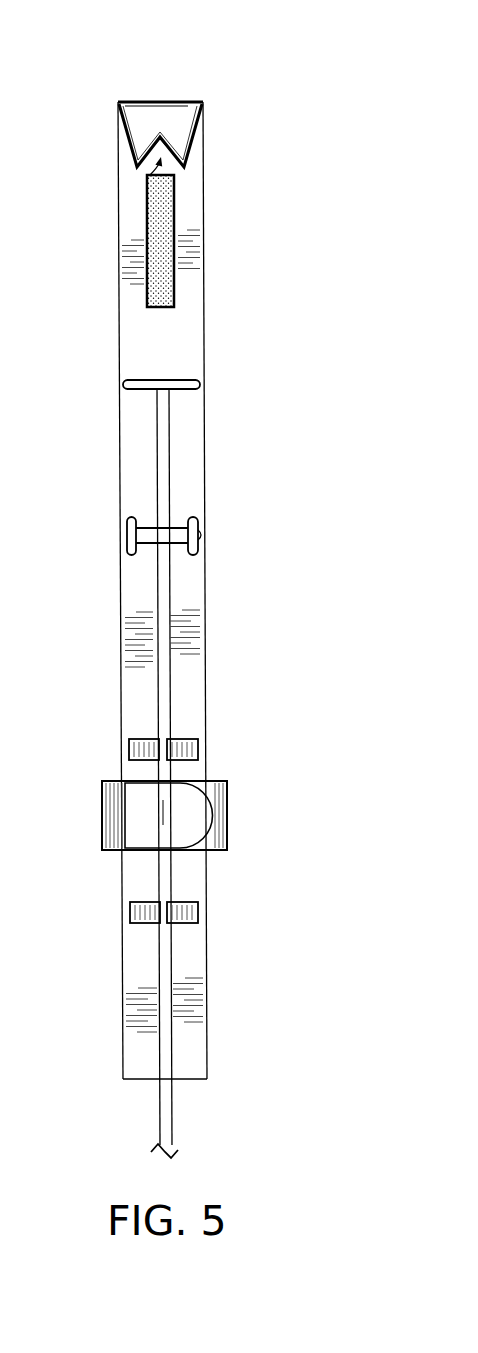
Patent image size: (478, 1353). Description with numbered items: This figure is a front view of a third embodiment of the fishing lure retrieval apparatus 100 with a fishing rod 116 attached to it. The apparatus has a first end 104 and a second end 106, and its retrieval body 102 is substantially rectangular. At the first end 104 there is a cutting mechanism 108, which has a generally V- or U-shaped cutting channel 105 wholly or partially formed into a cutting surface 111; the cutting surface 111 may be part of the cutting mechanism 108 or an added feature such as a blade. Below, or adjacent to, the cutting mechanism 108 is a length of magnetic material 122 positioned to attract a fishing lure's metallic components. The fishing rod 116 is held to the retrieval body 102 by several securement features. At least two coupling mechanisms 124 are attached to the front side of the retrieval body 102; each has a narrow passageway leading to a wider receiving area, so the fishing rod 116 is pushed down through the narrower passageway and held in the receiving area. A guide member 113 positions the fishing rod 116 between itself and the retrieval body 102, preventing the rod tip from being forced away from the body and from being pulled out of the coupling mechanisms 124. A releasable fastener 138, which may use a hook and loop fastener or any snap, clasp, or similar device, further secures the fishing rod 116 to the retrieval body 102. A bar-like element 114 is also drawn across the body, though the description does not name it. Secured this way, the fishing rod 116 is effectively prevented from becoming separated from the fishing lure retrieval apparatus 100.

The fishing lure retrieval apparatus 100 is at (272, 53).
The retrieval body 102 is at (103, 470).
The first end 104 is at (167, 132).
The cutting channel 105 is at (160, 162).
The second end 106 is at (242, 1108).
The cutting mechanism 108 is at (201, 153).
The cutting surface 111 is at (160, 142).
The guide member 113 is at (192, 523).
The stop plate 114 is at (198, 385).
The fishing rod 116 is at (158, 1115).
The magnetic material 122 is at (162, 282).
The coupling mechanisms 124 is at (203, 750).
The releasable fastener 138 is at (227, 815).